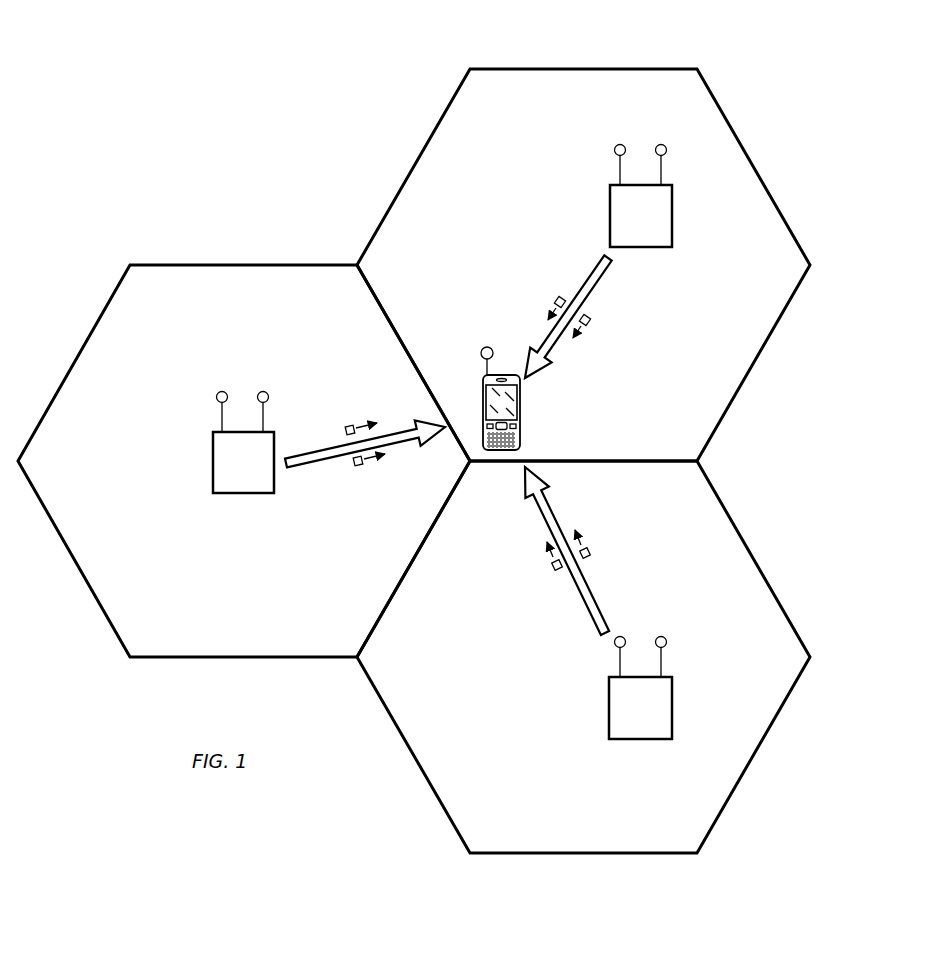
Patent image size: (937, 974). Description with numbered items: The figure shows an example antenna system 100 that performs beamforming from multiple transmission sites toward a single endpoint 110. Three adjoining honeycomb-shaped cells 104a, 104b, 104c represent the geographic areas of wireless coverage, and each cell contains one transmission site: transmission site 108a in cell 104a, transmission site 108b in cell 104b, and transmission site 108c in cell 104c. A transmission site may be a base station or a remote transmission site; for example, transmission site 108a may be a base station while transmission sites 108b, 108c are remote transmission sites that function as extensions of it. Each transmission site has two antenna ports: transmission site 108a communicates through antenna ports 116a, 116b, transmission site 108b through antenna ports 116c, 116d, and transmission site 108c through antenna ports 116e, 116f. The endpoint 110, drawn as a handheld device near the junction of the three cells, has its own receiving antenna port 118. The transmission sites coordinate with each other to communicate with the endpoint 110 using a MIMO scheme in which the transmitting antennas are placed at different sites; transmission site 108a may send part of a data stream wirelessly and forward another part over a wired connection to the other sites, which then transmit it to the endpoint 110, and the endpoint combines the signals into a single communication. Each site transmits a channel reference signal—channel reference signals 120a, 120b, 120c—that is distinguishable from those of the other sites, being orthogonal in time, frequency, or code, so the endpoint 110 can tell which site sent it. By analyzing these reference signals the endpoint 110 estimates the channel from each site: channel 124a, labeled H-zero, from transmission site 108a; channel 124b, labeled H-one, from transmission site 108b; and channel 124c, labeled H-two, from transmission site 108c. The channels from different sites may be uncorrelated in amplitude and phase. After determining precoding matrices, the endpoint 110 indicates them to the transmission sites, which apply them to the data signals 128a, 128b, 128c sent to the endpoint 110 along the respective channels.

The antenna system 100 is at (218, 63).
The cell 104a is at (760, 162).
The cell 104b is at (760, 556).
The cell 104c is at (243, 261).
The transmission site 108a is at (672, 215).
The transmission site 108b is at (609, 708).
The transmission site 108c is at (213, 463).
The endpoint 110 is at (520, 400).
The antenna port 116a is at (620, 144).
The antenna port 116b is at (661, 144).
The antenna port 116c is at (625, 638).
The antenna port 116d is at (666, 645).
The antenna port 116e is at (222, 391).
The antenna port 116f is at (263, 391).
The antenna port 118 is at (481, 350).
The channel reference signal 120a is at (592, 326).
The channel reference signal 120b is at (554, 570).
The channel reference signal 120c is at (350, 425).
The channel 124a is at (588, 285).
The channel 124b is at (578, 600).
The channel 124c is at (322, 468).
The data signal 128a is at (555, 300).
The data signal 128b is at (590, 548).
The data signal 128c is at (365, 468).